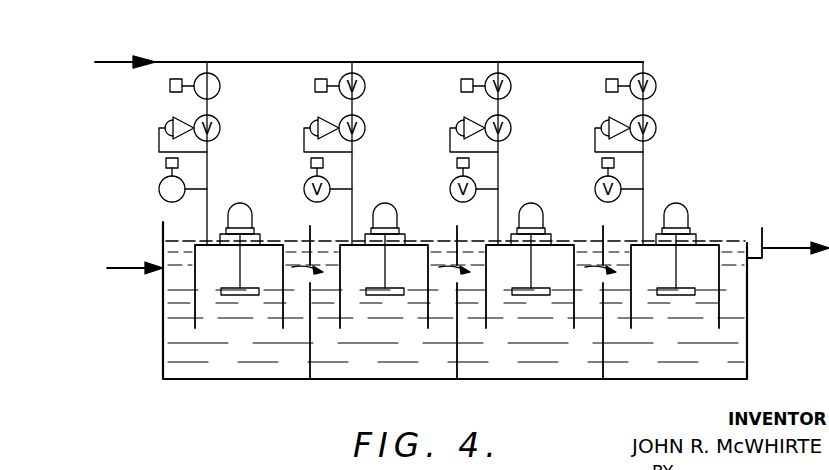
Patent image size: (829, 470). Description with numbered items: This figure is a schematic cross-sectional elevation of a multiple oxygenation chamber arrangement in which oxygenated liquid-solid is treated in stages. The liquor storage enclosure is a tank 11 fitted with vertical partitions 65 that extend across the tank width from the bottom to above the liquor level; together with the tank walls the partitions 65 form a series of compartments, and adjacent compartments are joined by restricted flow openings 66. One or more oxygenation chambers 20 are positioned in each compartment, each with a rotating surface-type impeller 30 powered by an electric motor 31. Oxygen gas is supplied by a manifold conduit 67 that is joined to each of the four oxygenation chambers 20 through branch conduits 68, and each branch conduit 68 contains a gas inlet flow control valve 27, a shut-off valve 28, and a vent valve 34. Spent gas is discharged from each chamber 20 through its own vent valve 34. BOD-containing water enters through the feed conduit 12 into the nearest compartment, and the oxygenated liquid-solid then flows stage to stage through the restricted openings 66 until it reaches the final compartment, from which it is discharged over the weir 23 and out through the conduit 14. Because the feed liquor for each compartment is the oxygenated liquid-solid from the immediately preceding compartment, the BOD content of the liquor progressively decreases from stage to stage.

The tank 11 is at (188, 380).
The BOD-containing water feed conduit 12 is at (137, 269).
The conduit 14 is at (779, 248).
The oxygenation chamber 20 is at (198, 312).
The weir 23 is at (757, 243).
The gas inlet flow control valve 27 is at (167, 125).
The shut-off valve 28 is at (170, 89).
The rotating surface-type impeller 30 is at (250, 263).
The electric motor 31 is at (257, 201).
The vent valve 34 is at (158, 190).
The vertical partition 65 is at (304, 373).
The restricted flow opening 66 is at (309, 262).
The manifold conduit 67 is at (175, 61).
The branch conduit 68 is at (209, 63).